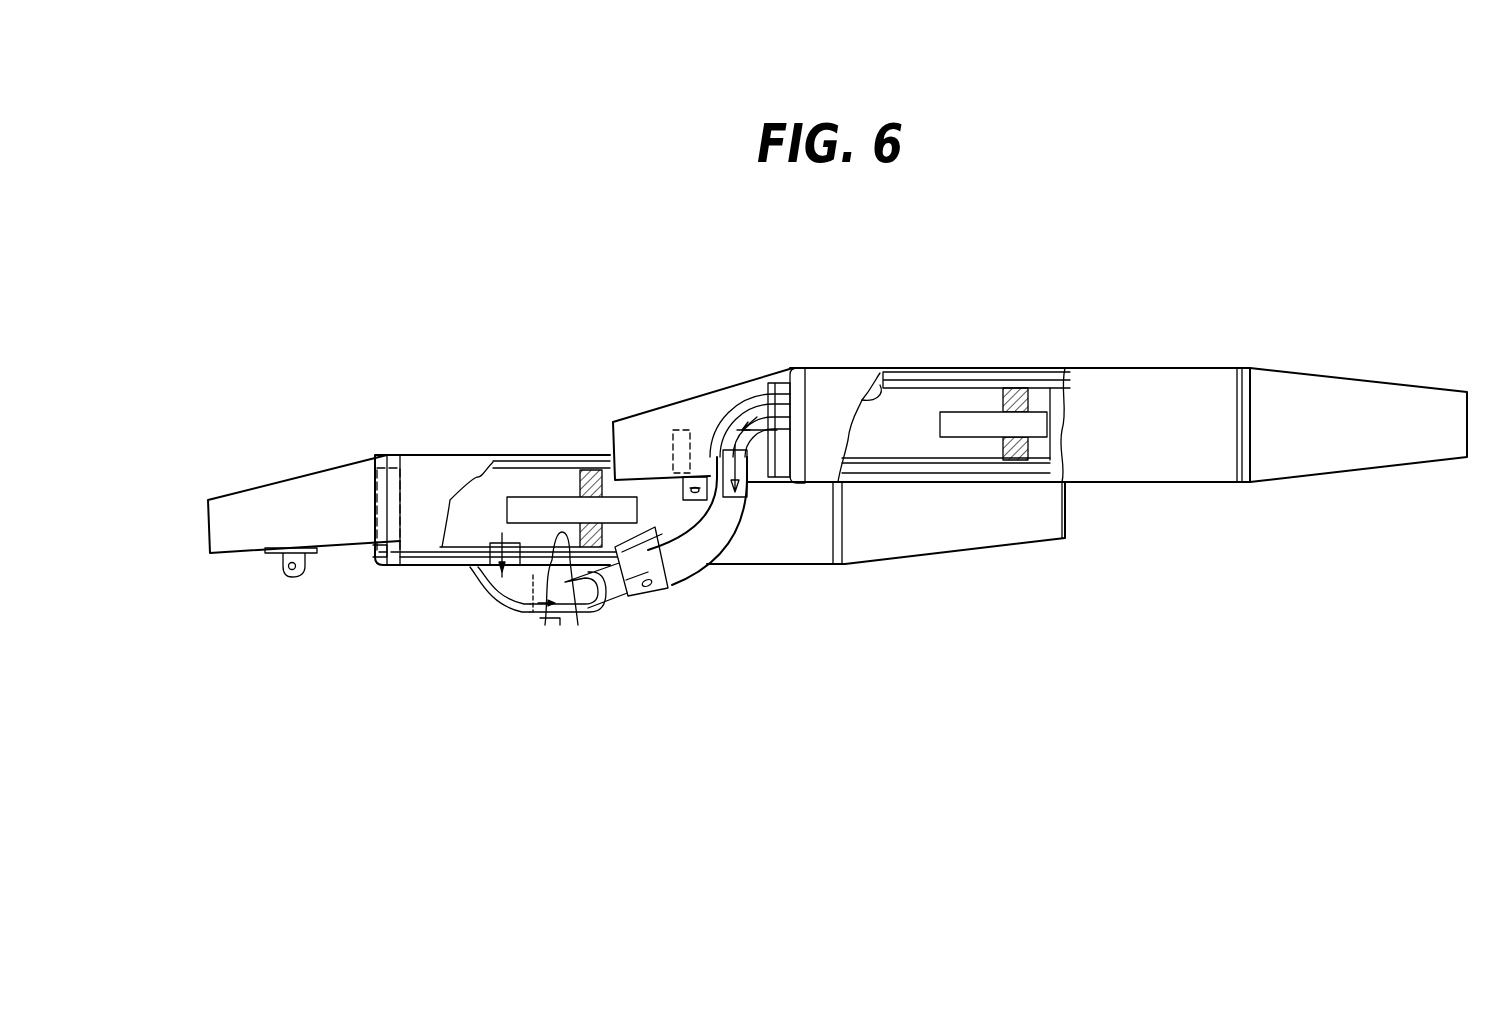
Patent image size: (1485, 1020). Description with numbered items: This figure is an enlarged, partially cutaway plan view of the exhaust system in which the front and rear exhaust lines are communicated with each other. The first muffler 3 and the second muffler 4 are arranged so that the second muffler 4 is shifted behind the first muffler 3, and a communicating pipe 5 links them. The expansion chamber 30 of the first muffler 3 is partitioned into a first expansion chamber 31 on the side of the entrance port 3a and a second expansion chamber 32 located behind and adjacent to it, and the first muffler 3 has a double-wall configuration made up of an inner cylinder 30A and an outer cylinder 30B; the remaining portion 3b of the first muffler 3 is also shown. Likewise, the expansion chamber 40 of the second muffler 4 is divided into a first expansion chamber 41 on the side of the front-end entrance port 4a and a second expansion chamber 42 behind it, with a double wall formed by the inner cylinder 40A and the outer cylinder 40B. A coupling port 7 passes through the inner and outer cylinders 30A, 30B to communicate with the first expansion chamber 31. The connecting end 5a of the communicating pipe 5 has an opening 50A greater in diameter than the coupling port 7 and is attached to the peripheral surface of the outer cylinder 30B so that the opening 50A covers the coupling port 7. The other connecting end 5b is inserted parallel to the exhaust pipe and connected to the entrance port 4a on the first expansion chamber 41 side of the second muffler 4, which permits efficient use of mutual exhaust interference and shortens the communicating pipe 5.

The first muffler 3 is at (797, 570).
The entrance port 3a is at (207, 510).
The leg joint block 3b is at (432, 570).
The second muffler 4 is at (1172, 360).
The front-end entrance port 4a is at (613, 447).
The communicating pipe 5 is at (697, 567).
The connecting end 5a is at (547, 615).
The connecting end 5b is at (722, 462).
The coupling port 7 is at (473, 570).
The expansion chamber 30 is at (530, 480).
The inner cylinder 30A is at (590, 590).
The outer cylinder 30B is at (565, 615).
The first expansion chamber 31 is at (468, 518).
The second expansion chamber 32 is at (658, 582).
The expansion chamber 40 is at (960, 390).
The inner cylinder 40A is at (858, 403).
The outer cylinder 40B is at (912, 372).
The first expansion chamber 41 is at (923, 442).
The second expansion chamber 42 is at (1043, 398).
The opening 50A is at (487, 600).